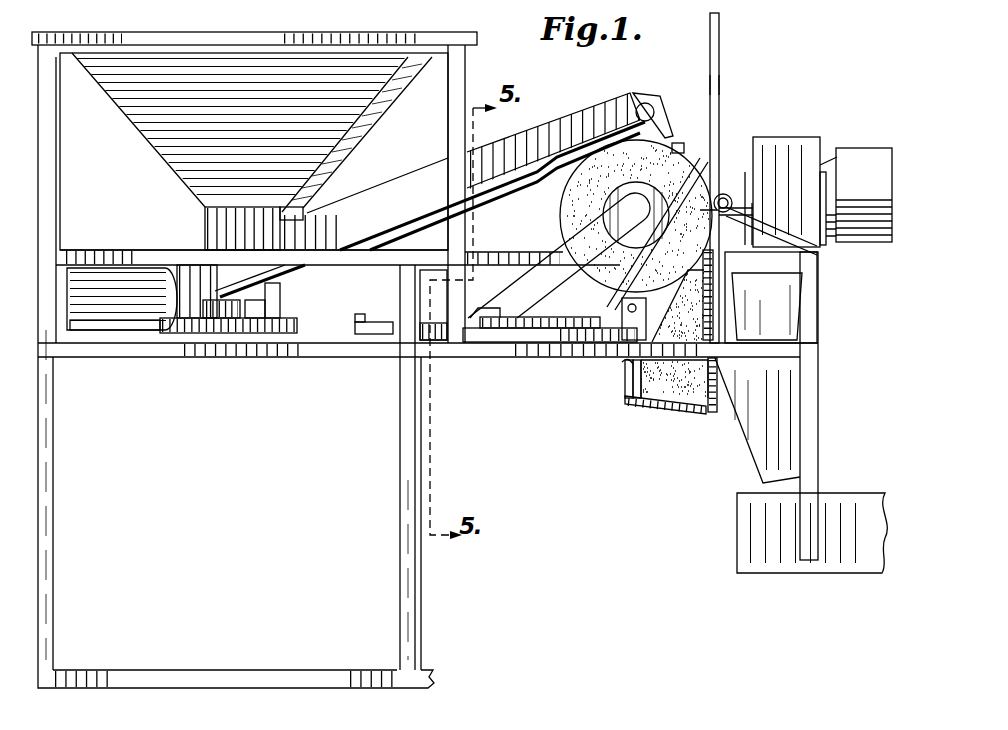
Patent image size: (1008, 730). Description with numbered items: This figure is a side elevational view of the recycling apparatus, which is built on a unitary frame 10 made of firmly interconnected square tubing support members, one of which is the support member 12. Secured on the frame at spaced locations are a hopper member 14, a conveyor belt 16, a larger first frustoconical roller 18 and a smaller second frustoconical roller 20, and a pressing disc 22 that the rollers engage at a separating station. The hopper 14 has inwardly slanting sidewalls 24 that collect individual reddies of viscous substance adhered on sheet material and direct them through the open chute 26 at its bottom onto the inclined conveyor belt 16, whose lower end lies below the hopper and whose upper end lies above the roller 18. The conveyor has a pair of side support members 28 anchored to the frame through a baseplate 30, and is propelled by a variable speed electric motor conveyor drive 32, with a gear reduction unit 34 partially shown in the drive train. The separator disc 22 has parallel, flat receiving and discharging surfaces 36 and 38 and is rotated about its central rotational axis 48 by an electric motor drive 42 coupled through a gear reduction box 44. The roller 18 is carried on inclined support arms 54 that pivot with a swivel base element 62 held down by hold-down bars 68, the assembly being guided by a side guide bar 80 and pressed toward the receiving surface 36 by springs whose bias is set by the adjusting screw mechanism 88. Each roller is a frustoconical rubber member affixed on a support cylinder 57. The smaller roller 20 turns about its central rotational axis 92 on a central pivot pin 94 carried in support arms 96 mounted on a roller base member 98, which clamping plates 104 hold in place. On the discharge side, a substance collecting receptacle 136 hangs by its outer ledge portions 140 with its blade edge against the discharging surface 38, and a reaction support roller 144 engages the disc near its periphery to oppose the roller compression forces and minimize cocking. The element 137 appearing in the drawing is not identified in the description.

The unitary frame 10 is at (394, 471).
The square tubing support member 12 is at (335, 347).
The hopper member 14 is at (126, 127).
The conveyor belt 16 is at (647, 106).
The first frustoconical roller 18 is at (572, 194).
The second frustoconical roller 20 is at (717, 382).
The pressing disc 22 is at (715, 48).
The inwardly slanting sidewalls 24 is at (300, 68).
The open chute 26 is at (213, 222).
The side support members 28 is at (495, 188).
The baseplate 30 is at (292, 323).
The electric motor conveyor drive 32 is at (103, 275).
The gear reduction unit 34 is at (283, 291).
The receiving surface 36 is at (710, 80).
The discharging surface 38 is at (720, 80).
The electric motor drive 42 is at (865, 152).
The gear reduction box 44 is at (790, 140).
The central rotational axis 48 is at (752, 212).
The support arms 54 is at (567, 255).
The support cylinder 57 is at (636, 215).
The swivel base element 62 is at (532, 317).
The hold-down bars 68 is at (475, 317).
The side guide bar 80 is at (525, 337).
The adjusting screw mechanism 88 is at (382, 324).
The central rotational axis of roller 92 is at (665, 432).
The central pivot pin 94 is at (673, 410).
The support arms 96 is at (649, 411).
The roller base member 98 is at (630, 393).
The clamping plates 104 is at (624, 371).
The substance collecting receptacle 136 is at (765, 452).
The base block 137 is at (845, 505).
The outer ledge portions 140 is at (828, 250).
The reaction support roller 144 is at (723, 198).